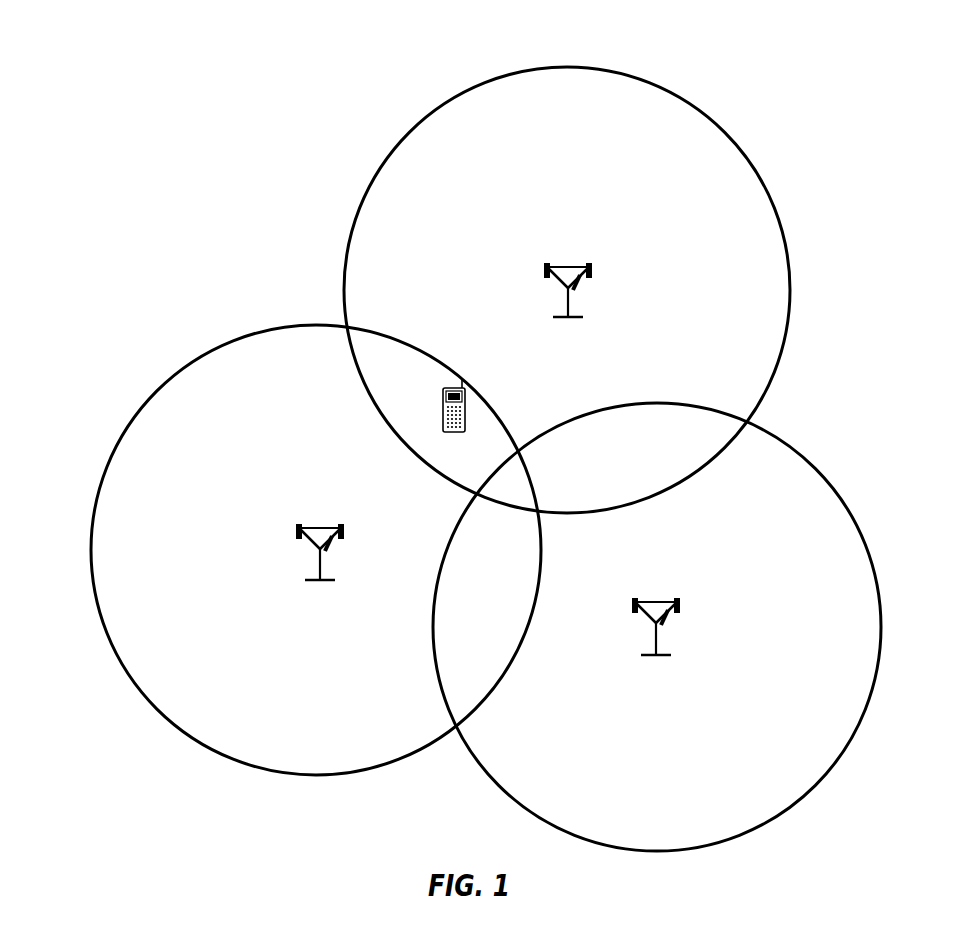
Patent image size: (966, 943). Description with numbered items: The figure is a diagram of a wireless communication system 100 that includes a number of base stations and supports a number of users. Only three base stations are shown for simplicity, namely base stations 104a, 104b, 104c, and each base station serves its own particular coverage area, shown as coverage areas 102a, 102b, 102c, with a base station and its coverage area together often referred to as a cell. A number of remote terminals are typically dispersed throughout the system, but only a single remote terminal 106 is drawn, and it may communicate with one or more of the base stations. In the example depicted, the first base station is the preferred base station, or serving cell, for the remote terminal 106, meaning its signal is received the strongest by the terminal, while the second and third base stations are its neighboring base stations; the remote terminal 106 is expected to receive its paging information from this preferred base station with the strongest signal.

The wireless communication system 100 is at (890, 66).
The coverage area 102a is at (562, 68).
The coverage area 102b is at (164, 389).
The coverage area 102c is at (827, 478).
The base station 104a is at (563, 266).
The base station 104b is at (316, 529).
The base station 104c is at (652, 606).
The remote terminal 106 is at (443, 401).